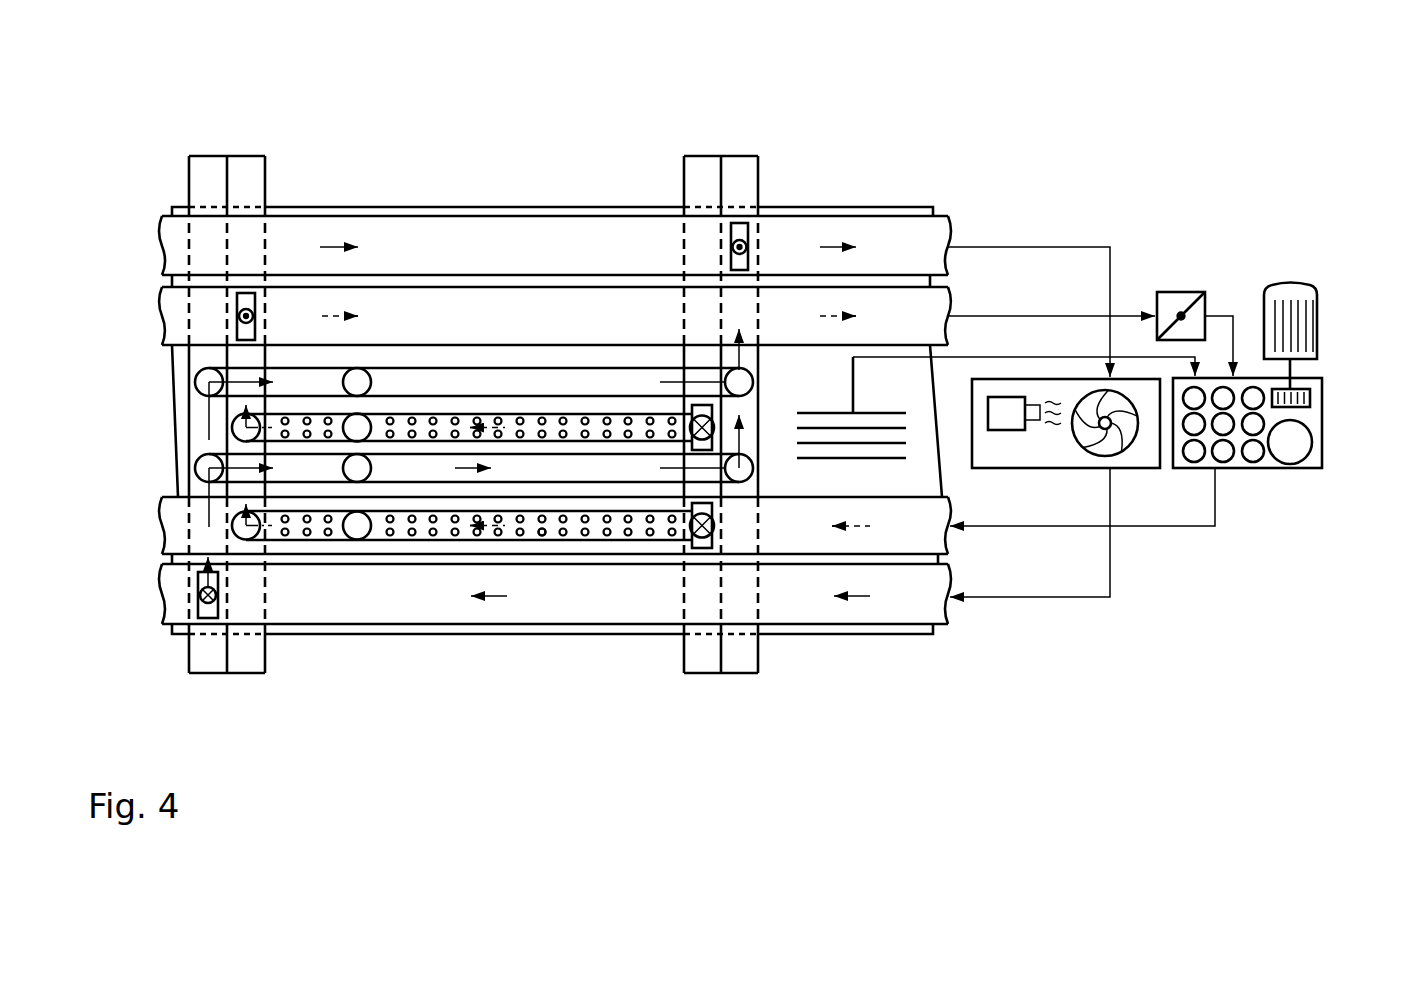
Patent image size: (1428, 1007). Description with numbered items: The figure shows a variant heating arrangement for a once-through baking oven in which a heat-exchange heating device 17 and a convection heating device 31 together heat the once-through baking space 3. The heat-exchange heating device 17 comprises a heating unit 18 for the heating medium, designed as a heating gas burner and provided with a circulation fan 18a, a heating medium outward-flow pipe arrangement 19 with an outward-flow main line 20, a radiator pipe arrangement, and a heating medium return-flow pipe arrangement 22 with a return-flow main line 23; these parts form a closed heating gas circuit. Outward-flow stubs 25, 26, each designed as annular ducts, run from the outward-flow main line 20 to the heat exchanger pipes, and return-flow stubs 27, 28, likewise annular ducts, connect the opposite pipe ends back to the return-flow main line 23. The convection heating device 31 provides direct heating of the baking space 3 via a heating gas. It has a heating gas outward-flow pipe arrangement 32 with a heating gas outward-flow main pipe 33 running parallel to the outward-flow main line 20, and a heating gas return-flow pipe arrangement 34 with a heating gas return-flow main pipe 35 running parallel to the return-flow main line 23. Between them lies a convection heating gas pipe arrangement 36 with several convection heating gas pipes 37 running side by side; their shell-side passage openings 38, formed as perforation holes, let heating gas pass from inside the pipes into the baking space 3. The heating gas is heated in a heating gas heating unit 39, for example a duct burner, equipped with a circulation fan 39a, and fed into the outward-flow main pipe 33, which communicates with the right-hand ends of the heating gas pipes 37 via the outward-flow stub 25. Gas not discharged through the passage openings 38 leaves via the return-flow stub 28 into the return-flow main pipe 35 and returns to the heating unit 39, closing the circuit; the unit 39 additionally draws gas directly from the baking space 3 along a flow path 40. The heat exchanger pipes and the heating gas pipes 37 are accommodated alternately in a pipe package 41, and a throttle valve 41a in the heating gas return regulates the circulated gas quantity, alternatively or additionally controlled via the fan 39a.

The once-through baking space 3 is at (806, 393).
The heat-exchange heating device 17 is at (872, 214).
The heating unit 18 is at (1050, 465).
The circulation fan 18a is at (1122, 442).
The heating medium outward-flow pipe arrangement 19 is at (495, 626).
The outward-flow main line 20 is at (618, 608).
The heating medium return-flow pipe arrangement 22 is at (329, 214).
The return-flow main line 23 is at (393, 228).
The outward-flow stub 25 is at (708, 662).
The outward-flow stub 26 is at (203, 667).
The return-flow stub 27 is at (747, 662).
The return-flow stub 28 is at (247, 667).
The convection heating device 31 is at (809, 285).
The heating gas outward-flow pipe arrangement 32 is at (808, 557).
The heating gas outward-flow main pipe 33 is at (902, 547).
The heating gas return-flow pipe arrangement 34 is at (528, 285).
The heating gas return-flow main pipe 35 is at (555, 303).
The convection heating gas pipe arrangement 36 is at (337, 543).
The convection heating gas pipes 37 is at (400, 532).
The passage openings 38 is at (540, 532).
The heating gas heating unit 39 is at (1312, 417).
The circulation fan 39a is at (1308, 397).
The flow path 40 is at (998, 357).
The pipe package 41 is at (142, 366).
The throttle valve 41a is at (1181, 300).